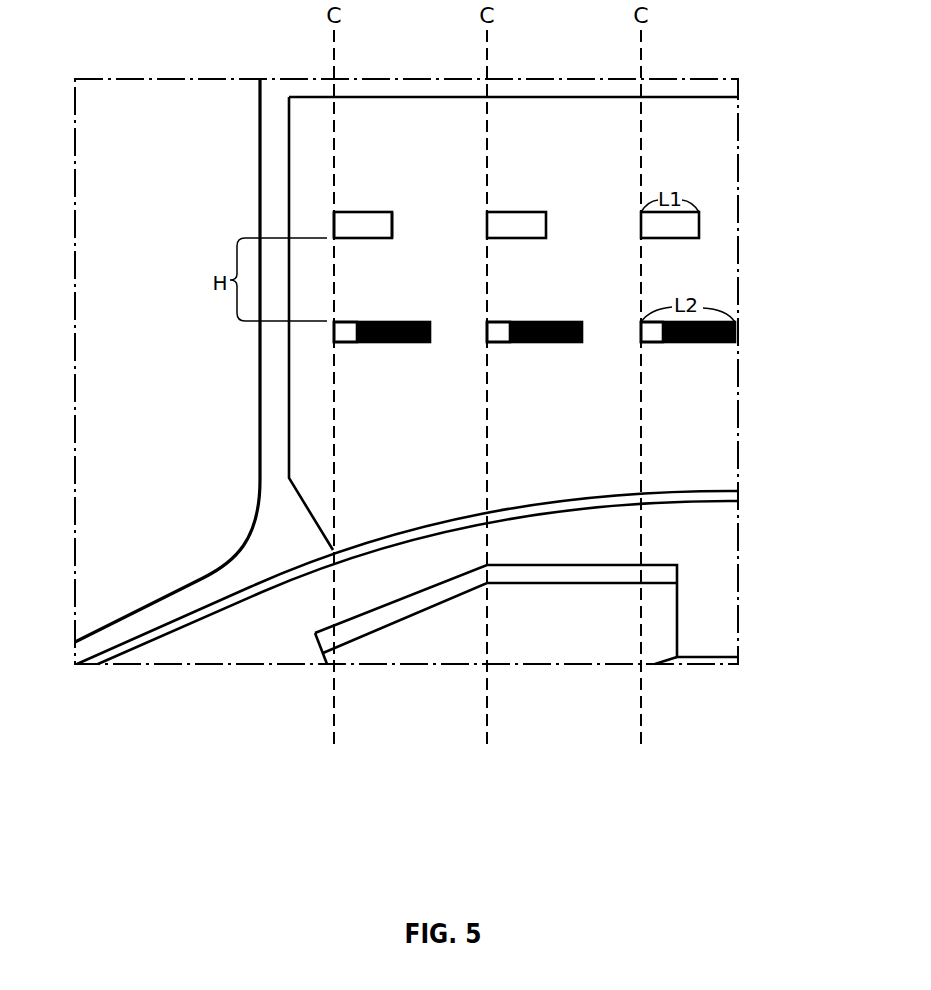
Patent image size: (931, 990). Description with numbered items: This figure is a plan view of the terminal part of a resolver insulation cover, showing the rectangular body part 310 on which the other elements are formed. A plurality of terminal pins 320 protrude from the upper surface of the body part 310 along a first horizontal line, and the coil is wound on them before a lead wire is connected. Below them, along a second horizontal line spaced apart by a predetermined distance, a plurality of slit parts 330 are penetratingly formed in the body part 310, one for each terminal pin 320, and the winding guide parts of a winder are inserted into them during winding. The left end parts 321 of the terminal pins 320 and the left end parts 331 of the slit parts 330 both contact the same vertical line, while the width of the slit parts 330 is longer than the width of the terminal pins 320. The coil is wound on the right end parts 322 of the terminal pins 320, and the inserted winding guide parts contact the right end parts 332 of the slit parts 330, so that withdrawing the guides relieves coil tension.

The body part 310 is at (692, 427).
The terminal pin 320 is at (362, 220).
The left end part of terminal pin 321 is at (333, 226).
The right end part of terminal pin 322 is at (393, 224).
The slit part 330 is at (347, 342).
The left end part of slit part 331 is at (330, 330).
The right end part of slit part 332 is at (430, 333).